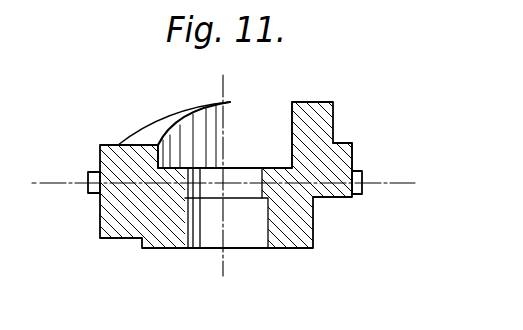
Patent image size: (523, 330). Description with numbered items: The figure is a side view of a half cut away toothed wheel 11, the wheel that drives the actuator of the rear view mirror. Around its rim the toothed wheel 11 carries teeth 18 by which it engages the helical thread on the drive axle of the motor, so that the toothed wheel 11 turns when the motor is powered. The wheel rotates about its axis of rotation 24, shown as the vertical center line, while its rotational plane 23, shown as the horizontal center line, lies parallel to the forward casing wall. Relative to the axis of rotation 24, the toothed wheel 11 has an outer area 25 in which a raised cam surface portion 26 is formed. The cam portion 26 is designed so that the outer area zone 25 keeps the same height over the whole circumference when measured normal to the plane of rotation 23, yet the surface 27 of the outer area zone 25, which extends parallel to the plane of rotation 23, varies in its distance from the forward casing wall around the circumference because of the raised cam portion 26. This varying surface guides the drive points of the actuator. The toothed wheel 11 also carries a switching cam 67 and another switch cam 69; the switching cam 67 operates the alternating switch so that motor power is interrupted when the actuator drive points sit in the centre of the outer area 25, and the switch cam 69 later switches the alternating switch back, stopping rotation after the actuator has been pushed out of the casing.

The toothed wheel 11 is at (272, 101).
The teeth 18 is at (89, 194).
The rotational plane 23 is at (60, 183).
The axis of rotation 24 is at (225, 272).
The outer area 25 is at (315, 117).
The raised cam surface portion 26 is at (163, 127).
The surface 27 is at (132, 142).
The switching cam 67 is at (352, 147).
The switch cam 69 is at (108, 157).